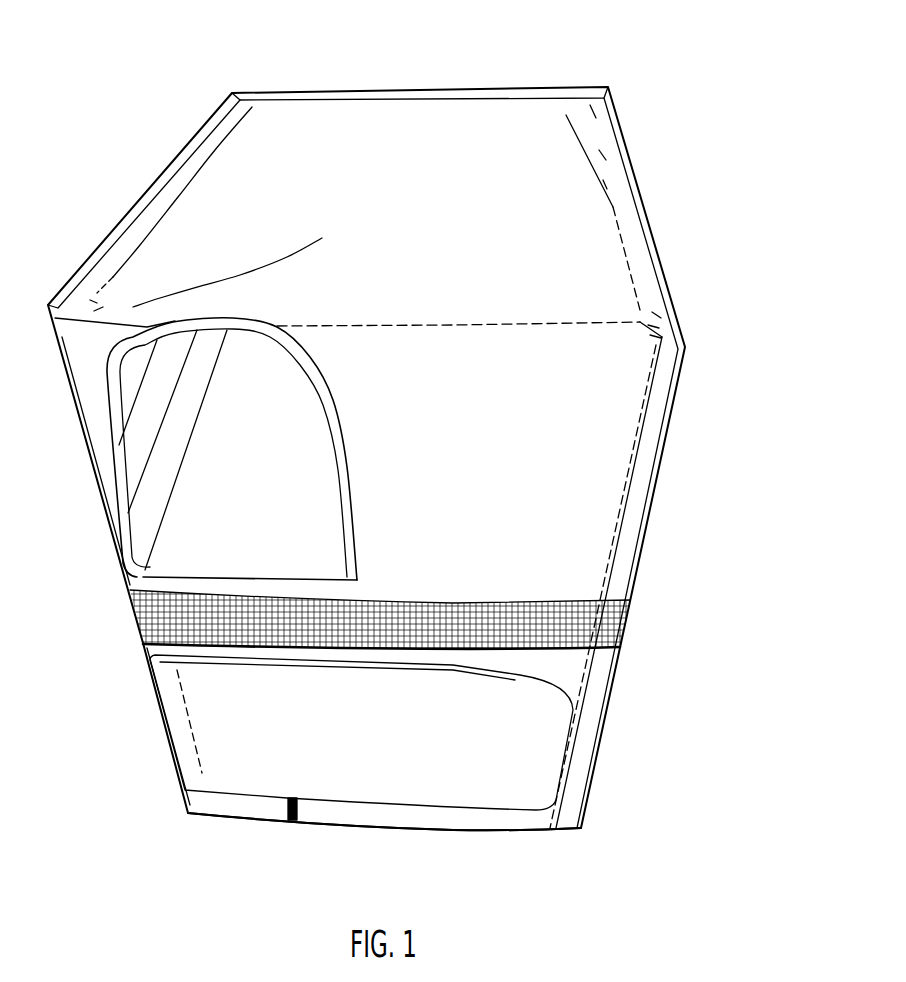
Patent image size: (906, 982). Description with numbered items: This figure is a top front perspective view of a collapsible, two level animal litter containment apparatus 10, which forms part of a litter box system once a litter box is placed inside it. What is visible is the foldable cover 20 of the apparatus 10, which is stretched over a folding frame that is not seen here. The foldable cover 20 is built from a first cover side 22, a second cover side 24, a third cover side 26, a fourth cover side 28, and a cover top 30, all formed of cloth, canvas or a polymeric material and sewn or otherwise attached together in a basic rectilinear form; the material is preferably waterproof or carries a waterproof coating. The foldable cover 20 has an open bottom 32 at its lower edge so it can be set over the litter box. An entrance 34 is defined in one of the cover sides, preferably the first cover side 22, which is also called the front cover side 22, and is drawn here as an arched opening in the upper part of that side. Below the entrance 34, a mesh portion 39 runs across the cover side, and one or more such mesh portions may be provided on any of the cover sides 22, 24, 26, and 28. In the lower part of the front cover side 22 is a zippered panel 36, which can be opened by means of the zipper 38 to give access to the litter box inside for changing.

The collapsible, two level animal litter containment apparatus 10 is at (585, 57).
The foldable cover 20 is at (608, 206).
The first cover side 22 is at (608, 523).
The second cover side 24 is at (112, 213).
The third cover side 26 is at (418, 82).
The fourth cover side 28 is at (676, 258).
The cover top 30 is at (421, 216).
The open bottom 32 is at (556, 837).
The entrance 34 is at (128, 482).
The zippered panel 36 is at (416, 779).
The zipper 38 is at (300, 808).
The mesh portion 39 is at (576, 623).